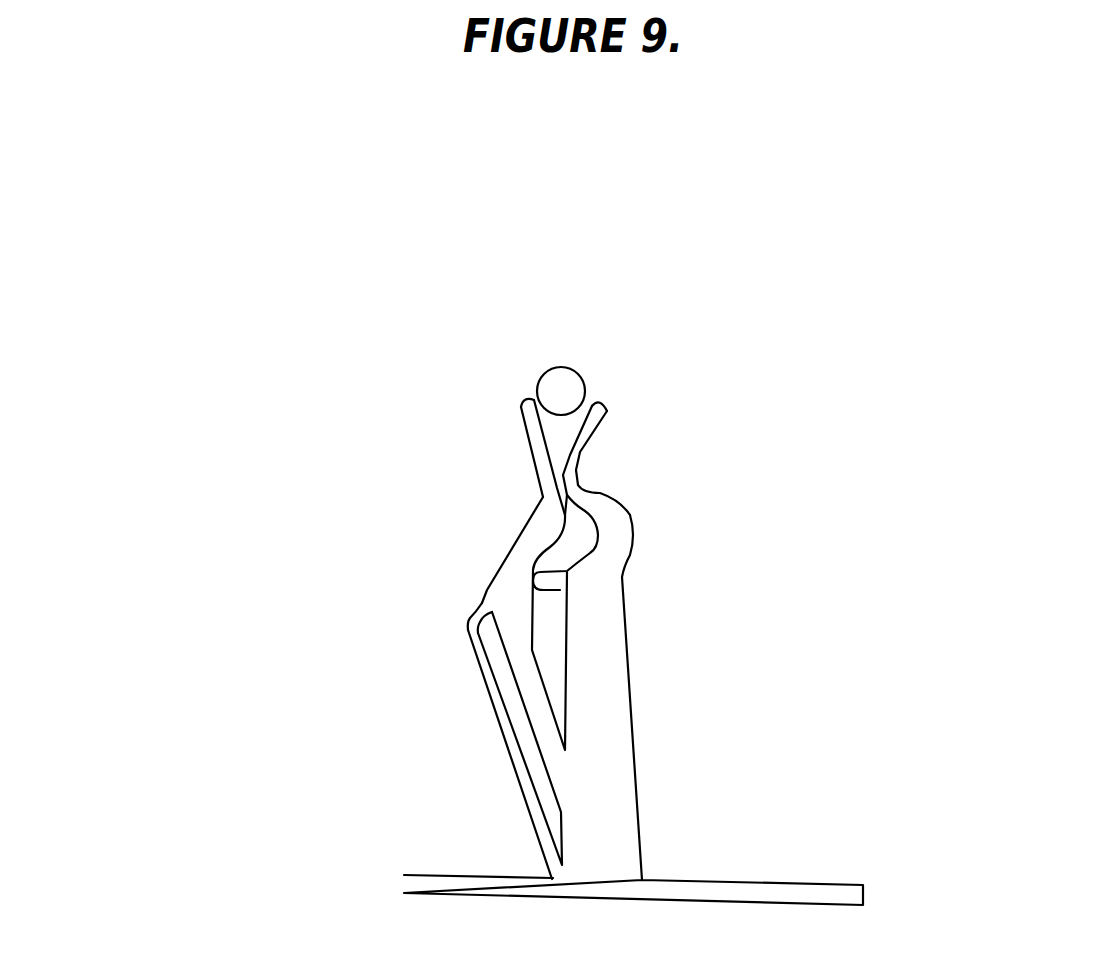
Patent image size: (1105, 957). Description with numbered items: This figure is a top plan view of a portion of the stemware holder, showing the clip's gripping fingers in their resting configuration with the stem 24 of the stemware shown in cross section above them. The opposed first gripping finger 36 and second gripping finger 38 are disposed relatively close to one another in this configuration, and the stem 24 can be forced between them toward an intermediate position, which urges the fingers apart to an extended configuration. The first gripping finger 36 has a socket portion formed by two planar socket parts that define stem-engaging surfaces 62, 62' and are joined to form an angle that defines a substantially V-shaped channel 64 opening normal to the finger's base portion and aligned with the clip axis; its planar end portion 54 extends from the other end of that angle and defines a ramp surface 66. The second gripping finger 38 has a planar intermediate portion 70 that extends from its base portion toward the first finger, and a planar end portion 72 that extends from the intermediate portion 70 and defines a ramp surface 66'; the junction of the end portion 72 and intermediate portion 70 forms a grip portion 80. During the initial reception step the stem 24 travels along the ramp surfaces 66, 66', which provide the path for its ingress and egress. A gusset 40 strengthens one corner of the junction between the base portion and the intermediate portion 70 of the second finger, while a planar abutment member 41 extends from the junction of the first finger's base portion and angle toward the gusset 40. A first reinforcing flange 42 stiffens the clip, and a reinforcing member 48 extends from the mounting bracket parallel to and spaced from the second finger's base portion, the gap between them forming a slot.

The stem 24 is at (558, 385).
The first gripping finger 36 is at (877, 343).
The second gripping finger 38 is at (225, 451).
The gusset 40 is at (532, 610).
The abutment member 41 is at (550, 580).
The first reinforcing flange 42 is at (607, 733).
The reinforcing member 48 is at (512, 740).
The end portion 54 is at (582, 453).
The stem-engaging surface 62 is at (695, 578).
The stem-engaging surface 62' is at (694, 491).
The V-shaped channel 64 is at (578, 534).
The ramp surface 66 is at (696, 349).
The ramp surface 66' is at (436, 330).
The intermediate portion 70 is at (542, 525).
The end portion 72 is at (538, 448).
The grip portion 80 is at (558, 540).